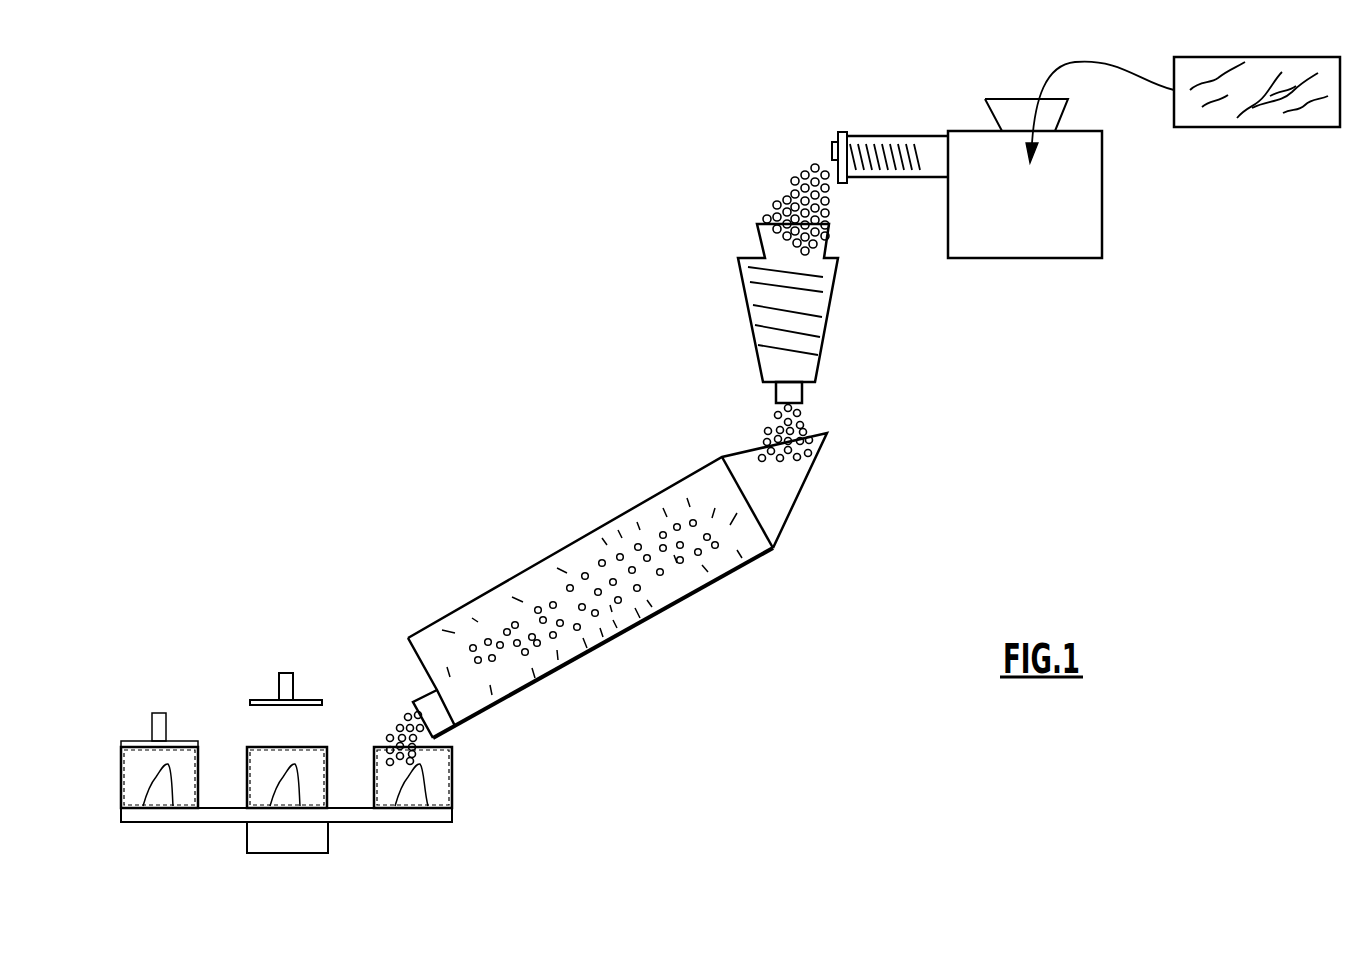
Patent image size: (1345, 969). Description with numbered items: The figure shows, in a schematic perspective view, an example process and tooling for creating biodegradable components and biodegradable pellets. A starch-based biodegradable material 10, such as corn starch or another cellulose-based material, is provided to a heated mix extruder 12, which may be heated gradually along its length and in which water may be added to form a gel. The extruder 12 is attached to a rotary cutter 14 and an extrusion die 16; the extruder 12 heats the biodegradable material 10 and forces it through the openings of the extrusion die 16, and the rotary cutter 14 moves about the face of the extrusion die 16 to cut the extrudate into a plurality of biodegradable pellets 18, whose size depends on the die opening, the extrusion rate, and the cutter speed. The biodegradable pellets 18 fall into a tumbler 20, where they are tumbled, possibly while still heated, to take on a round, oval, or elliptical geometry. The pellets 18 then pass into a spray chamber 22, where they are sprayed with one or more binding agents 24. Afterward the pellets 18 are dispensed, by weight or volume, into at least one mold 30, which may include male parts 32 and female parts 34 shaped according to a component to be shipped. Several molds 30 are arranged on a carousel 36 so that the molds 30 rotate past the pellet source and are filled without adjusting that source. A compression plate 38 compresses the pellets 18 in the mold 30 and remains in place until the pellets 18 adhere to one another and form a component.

The starch-based biodegradable material 10 is at (1277, 57).
The heated mix extruder 12 is at (1063, 215).
The rotary cutter 14 is at (832, 148).
The extrusion die 16 is at (838, 133).
The biodegradable pellets 18 is at (790, 195).
The tumbler 20 is at (810, 308).
The spray chamber 22 is at (588, 558).
The binding agents 24 is at (493, 602).
The mold 30 is at (354, 729).
The male parts 32 is at (157, 795).
The female parts 34 is at (262, 775).
The carousel 36 is at (472, 811).
The compression plate 38 is at (305, 700).